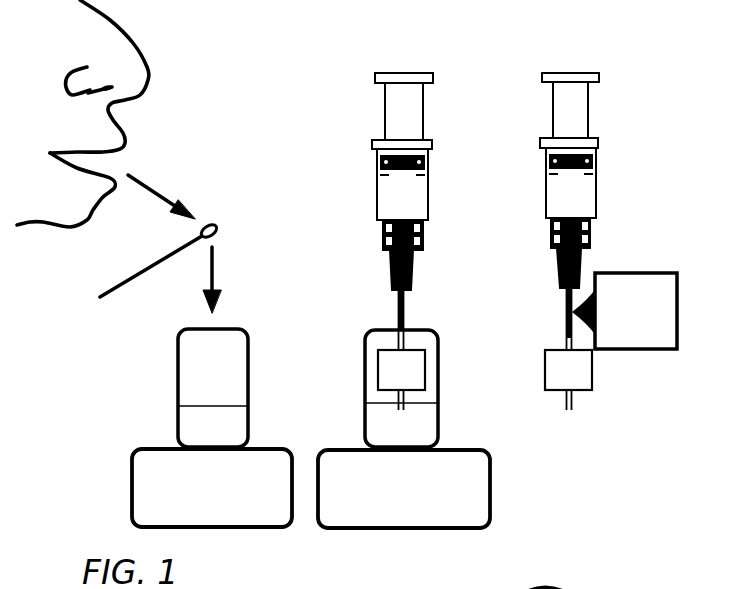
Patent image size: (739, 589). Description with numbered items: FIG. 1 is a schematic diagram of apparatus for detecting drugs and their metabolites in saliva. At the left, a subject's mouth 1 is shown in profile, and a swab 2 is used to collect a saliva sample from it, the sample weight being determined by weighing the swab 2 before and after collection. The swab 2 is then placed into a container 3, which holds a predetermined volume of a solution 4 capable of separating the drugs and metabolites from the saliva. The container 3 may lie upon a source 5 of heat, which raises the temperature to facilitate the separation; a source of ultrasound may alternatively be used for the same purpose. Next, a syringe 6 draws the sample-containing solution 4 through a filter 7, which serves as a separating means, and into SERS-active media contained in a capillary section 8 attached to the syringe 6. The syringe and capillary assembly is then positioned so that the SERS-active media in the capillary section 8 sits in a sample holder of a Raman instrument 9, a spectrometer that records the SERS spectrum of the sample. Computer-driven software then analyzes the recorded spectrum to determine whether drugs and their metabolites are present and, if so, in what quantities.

The mouth of subject 1 is at (83, 113).
The swab 2 is at (159, 259).
The container 3 is at (296, 388).
The solution 4 is at (308, 425).
The source of heat 5 is at (311, 488).
The syringe 6 is at (485, 161).
The filter 7 is at (485, 370).
The capillary section 8 is at (474, 349).
The Raman instrument 9 is at (624, 311).